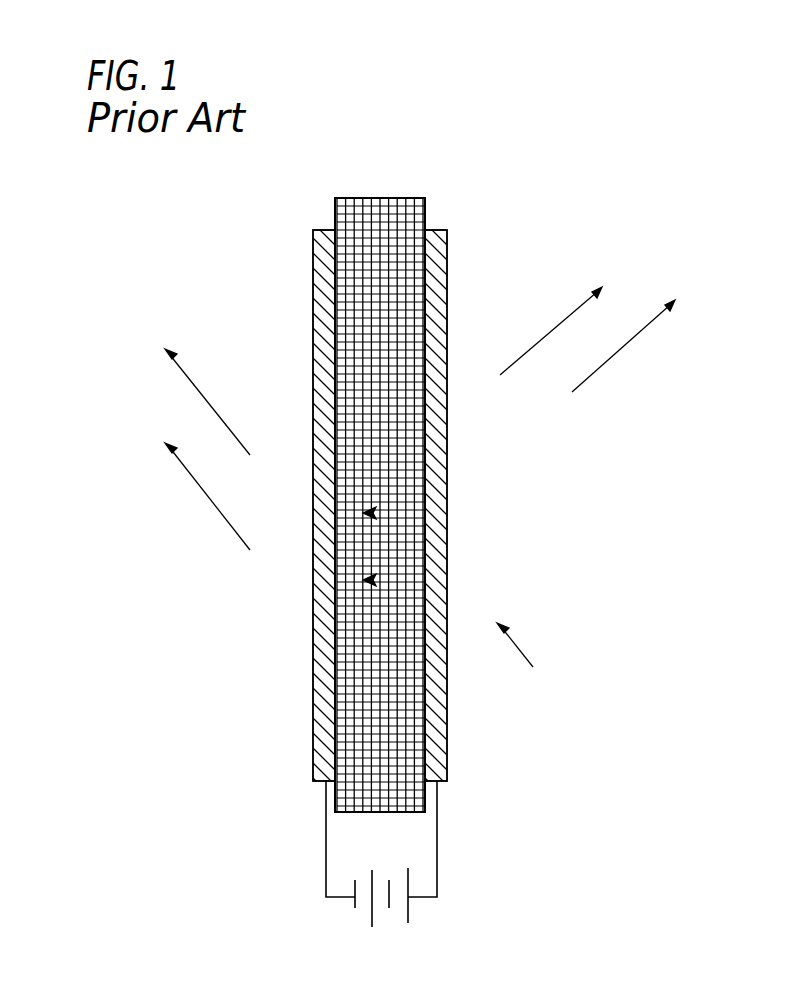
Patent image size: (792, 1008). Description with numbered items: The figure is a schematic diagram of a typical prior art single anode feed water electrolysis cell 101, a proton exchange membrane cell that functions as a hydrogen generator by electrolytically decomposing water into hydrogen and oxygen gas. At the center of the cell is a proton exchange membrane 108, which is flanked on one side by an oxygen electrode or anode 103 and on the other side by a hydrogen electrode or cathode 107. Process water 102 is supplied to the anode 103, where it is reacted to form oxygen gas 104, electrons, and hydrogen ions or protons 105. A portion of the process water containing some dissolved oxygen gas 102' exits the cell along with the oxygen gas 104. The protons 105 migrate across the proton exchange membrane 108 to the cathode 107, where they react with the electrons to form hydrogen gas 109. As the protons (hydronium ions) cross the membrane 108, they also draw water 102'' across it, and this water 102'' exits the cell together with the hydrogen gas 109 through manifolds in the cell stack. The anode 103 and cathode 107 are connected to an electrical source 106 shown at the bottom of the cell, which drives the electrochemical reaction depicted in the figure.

The single anode feed water electrolysis cell 101 is at (432, 162).
The process water 102 is at (536, 655).
The process water containing dissolved oxygen gas 102' is at (643, 339).
The water drawn across the membrane 102'' is at (334, 506).
The oxygen electrode (anode) 103 is at (447, 229).
The oxygen gas 104 is at (571, 319).
The protons 105 is at (367, 513).
The power source 106 is at (437, 852).
The hydrogen electrode (cathode) 107 is at (313, 229).
The proton exchange membrane 108 is at (375, 197).
The hydrogen gas 109 is at (199, 388).